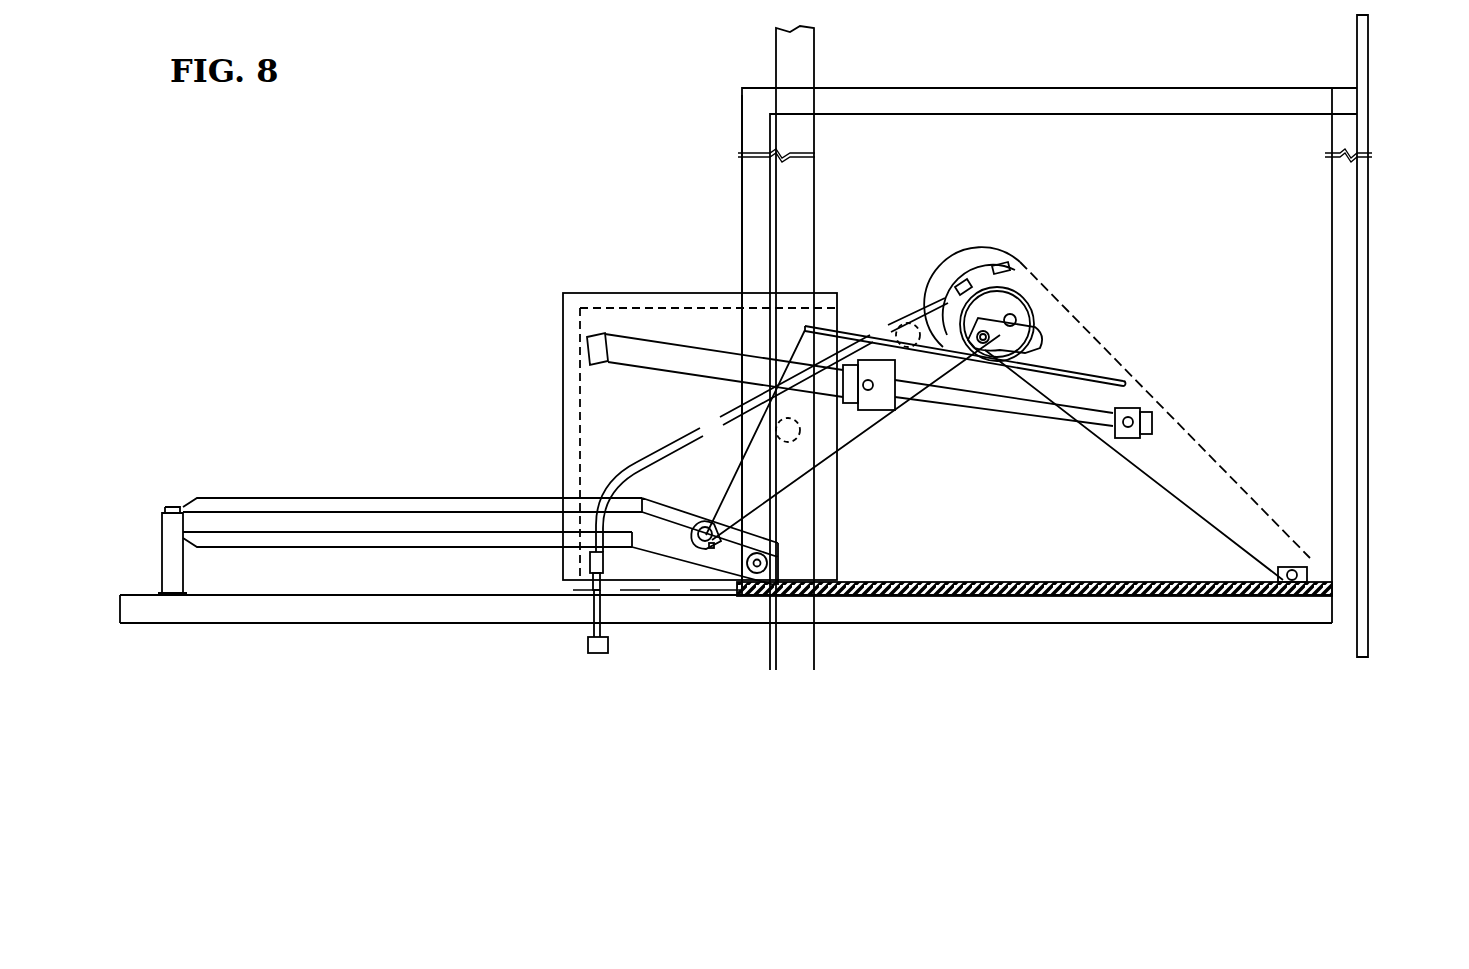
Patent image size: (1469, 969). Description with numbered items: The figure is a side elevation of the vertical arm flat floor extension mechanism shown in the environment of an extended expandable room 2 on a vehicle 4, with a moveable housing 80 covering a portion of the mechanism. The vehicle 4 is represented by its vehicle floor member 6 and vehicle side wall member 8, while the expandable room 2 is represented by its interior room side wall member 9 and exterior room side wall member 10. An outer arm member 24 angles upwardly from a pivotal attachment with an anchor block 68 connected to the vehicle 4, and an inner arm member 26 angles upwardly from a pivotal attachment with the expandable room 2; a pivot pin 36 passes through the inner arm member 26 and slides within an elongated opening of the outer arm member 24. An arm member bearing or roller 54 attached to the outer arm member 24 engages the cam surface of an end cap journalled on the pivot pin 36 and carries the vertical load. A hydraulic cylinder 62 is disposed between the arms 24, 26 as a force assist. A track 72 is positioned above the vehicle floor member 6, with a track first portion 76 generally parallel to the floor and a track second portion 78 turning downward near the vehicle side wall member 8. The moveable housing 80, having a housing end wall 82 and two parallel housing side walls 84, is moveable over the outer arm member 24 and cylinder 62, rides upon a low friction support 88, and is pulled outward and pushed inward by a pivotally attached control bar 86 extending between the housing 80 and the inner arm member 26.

The expandable room 2 is at (1005, 148).
The vehicle 4 is at (225, 385).
The vehicle floor member 6 is at (312, 610).
The vehicle side wall member 8 is at (795, 178).
The interior room side wall member 9 is at (758, 227).
The exterior room side wall member 10 is at (1352, 318).
The outer arm member 24 is at (858, 425).
The inner arm member 26 is at (1273, 532).
The pivot pin 36 is at (1012, 322).
The arm member bearing or roller 54 is at (1023, 337).
The hydraulic cylinder 62 is at (635, 354).
The anchor block 68 is at (630, 572).
The track 72 is at (402, 495).
The track first portion 76 is at (333, 520).
The track second portion 78 is at (698, 552).
The moveable housing 80 is at (623, 285).
The housing end wall 82 is at (562, 320).
The housing side walls 84 is at (603, 415).
The control bar 86 is at (848, 335).
The low friction support 88 is at (953, 597).